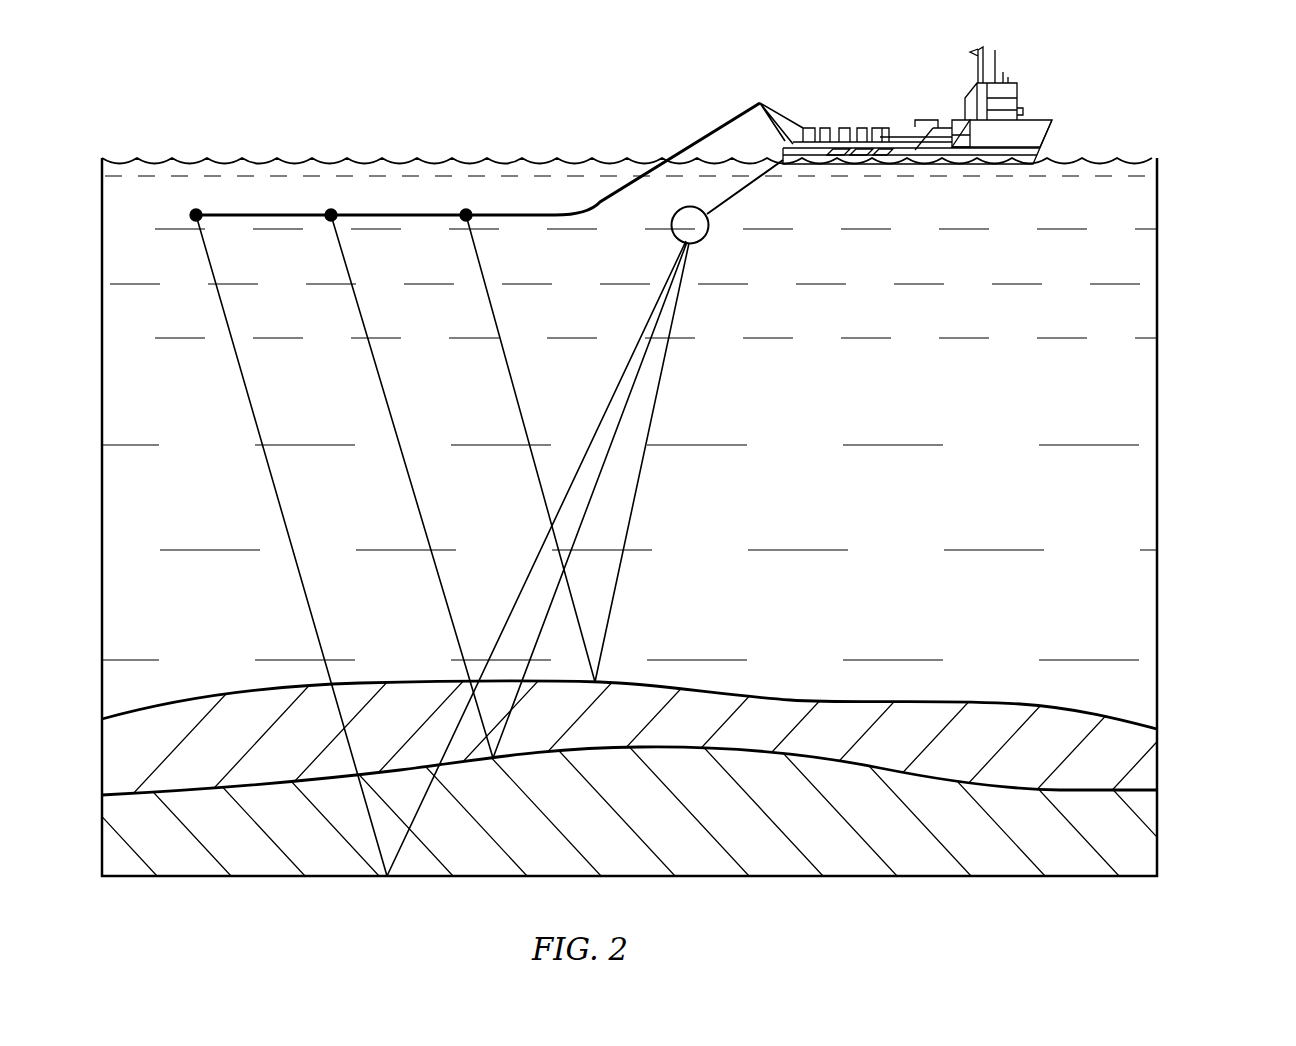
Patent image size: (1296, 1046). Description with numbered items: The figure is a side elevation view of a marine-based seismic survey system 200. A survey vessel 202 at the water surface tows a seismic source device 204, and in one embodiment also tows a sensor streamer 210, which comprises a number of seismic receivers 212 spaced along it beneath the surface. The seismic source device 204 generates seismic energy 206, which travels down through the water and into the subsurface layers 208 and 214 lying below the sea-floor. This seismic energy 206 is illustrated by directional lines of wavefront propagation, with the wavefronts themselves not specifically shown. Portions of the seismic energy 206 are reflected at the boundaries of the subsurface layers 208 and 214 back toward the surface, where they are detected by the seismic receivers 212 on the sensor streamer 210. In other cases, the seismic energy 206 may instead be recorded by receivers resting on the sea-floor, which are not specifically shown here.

The marine-based seismic survey system 200 is at (1196, 111).
The survey vessel 202 is at (1013, 87).
The seismic source device 204 is at (709, 233).
The seismic energy 206 is at (221, 304).
The subsurface layer 208 is at (1058, 758).
The sensor streamer 210 is at (535, 192).
The seismic receivers 212 is at (196, 215).
The subsurface layer 214 is at (1058, 842).